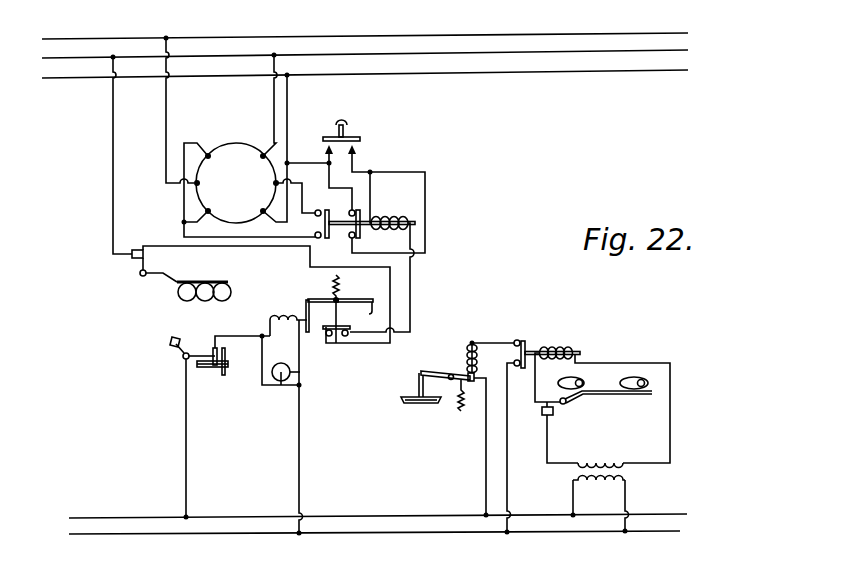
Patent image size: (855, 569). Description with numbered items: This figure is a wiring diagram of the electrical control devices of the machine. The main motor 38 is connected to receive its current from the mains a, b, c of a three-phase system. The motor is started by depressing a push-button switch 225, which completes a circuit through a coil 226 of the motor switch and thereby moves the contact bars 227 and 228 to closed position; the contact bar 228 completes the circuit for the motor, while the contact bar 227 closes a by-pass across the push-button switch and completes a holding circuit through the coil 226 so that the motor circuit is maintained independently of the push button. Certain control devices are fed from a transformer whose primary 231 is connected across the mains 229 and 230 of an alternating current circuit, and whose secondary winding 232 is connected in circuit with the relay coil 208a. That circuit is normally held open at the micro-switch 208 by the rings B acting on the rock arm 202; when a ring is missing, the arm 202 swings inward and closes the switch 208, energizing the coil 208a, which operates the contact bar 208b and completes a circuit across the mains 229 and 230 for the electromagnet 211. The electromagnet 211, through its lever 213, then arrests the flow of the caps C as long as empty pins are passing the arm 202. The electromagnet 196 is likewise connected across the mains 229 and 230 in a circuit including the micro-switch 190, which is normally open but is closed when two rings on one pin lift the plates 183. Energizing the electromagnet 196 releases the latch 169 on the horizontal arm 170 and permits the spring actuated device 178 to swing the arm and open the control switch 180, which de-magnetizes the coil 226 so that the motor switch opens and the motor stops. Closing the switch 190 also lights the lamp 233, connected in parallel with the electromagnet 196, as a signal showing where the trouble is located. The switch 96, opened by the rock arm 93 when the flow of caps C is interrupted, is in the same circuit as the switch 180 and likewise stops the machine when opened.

The main motor 38 is at (249, 190).
The electrical switch 96 is at (139, 245).
The rock arm 93 is at (172, 280).
The plates 183 is at (192, 351).
The micro-switch 190 is at (213, 347).
The electromagnet 196 is at (285, 302).
The latch 169 is at (310, 300).
The horizontal arm 170 is at (351, 301).
The spring actuated device 178 is at (342, 289).
The control switch 180 is at (340, 345).
The lamp 233 is at (300, 372).
The push-button switch 225 is at (344, 120).
The coil of the motor switch 226 is at (405, 216).
The contact bar 227 is at (371, 233).
The contact bar 228 is at (334, 234).
The electromagnet 211 is at (468, 351).
The lever 213 is at (434, 374).
The micro-switch 208 is at (595, 384).
The relay coil 208a is at (553, 411).
The contact bar 208b is at (526, 343).
The rock arm 202 is at (607, 394).
The secondary winding 232 is at (614, 441).
The primary 231 is at (600, 505).
The main 229 is at (655, 514).
The main 230 is at (682, 531).
The main a is at (370, 37).
The main b is at (377, 58).
The main c is at (398, 73).
The rings B is at (215, 370).
The caps C is at (178, 297).